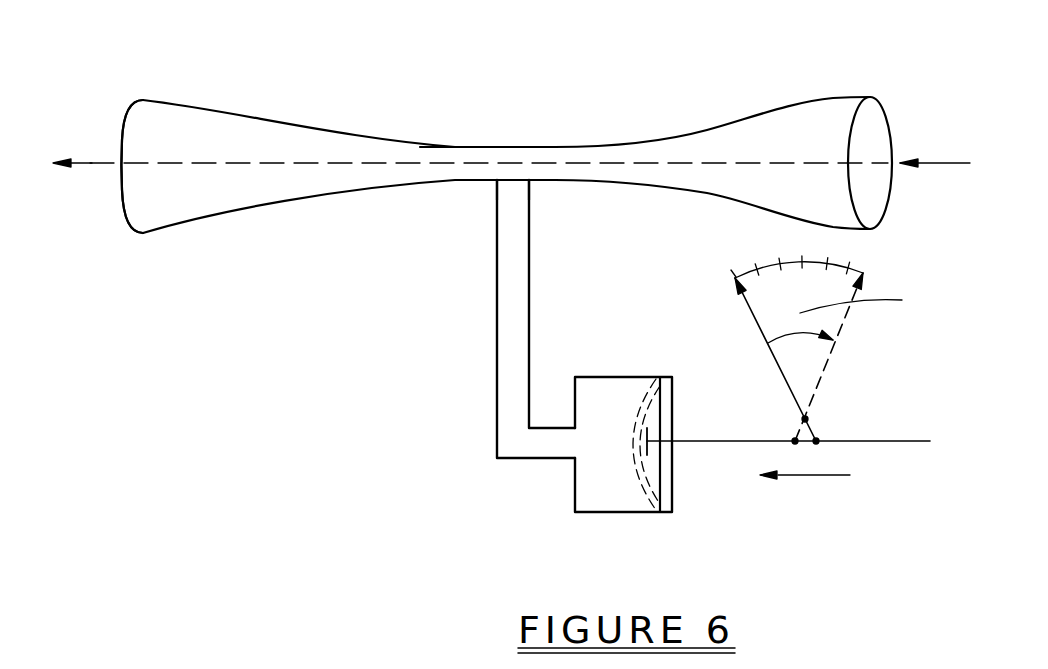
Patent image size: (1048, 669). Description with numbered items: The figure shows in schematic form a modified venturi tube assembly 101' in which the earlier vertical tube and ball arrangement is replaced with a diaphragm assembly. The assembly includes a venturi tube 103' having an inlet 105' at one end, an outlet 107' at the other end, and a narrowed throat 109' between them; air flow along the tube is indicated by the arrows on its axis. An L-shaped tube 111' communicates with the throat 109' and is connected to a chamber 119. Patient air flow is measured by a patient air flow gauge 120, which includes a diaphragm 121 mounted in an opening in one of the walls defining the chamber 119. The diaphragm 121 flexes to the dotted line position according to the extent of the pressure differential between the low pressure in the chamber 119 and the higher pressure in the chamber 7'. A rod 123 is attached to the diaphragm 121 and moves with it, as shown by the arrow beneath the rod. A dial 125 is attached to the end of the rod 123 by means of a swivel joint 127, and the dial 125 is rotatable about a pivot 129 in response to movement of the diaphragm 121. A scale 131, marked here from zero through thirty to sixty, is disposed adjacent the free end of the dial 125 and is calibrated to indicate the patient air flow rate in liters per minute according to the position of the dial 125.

The venturi tube assembly 101' is at (511, 214).
The venturi tube 103' is at (447, 95).
The inlet 105' is at (870, 137).
The outlet 107' is at (182, 138).
The throat 109' is at (531, 121).
The L-shaped tube 111' is at (496, 319).
The chamber 119 is at (593, 392).
The patient air flow gauge 120 is at (680, 479).
The diaphragm 121 is at (643, 392).
The rod 123 is at (715, 440).
The dial 125 is at (770, 355).
The swivel joint 127 is at (818, 445).
The pivot 129 is at (807, 418).
The scale 131 is at (843, 255).
The chamber 7' is at (427, 542).